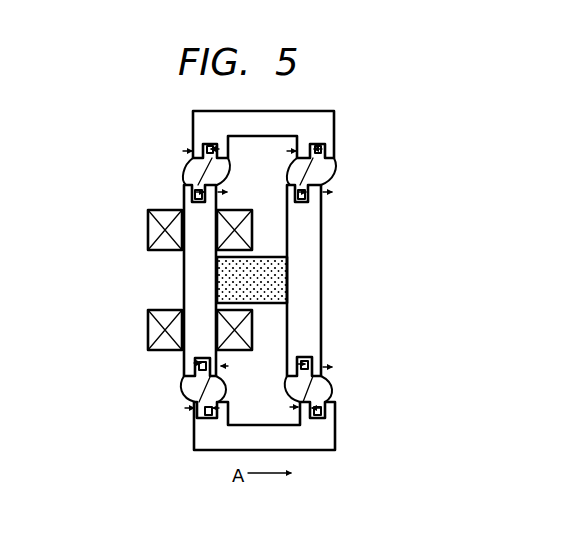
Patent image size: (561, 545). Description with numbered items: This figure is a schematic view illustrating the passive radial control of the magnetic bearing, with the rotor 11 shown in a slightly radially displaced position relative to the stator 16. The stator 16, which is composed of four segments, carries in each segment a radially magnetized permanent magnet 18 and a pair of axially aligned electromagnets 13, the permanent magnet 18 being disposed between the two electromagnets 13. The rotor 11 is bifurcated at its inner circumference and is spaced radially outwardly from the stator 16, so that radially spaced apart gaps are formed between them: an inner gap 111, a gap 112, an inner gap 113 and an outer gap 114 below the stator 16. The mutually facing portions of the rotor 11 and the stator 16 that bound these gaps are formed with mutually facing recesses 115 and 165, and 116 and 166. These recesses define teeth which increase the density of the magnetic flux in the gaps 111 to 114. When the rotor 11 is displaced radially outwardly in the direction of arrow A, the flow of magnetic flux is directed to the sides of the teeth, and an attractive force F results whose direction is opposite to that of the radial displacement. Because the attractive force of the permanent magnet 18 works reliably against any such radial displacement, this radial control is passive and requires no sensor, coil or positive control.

The rotor 11 is at (323, 123).
The inner gap 111 is at (198, 170).
The gap 112 is at (318, 170).
The inner gap 113 is at (195, 388).
The outer gap 114 is at (320, 388).
The recess 115 is at (203, 421).
The recess 116 is at (313, 366).
The electromagnets 13 is at (153, 325).
The stator 16 is at (313, 325).
The recess 165 is at (192, 357).
The recess 166 is at (327, 412).
The permanent magnet 18 is at (283, 271).
The attractive force F is at (325, 147).